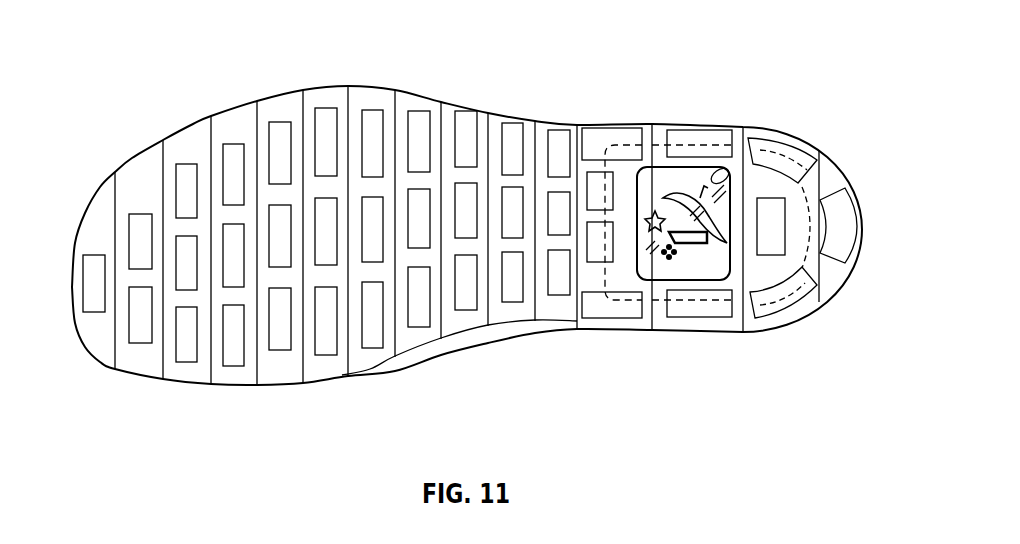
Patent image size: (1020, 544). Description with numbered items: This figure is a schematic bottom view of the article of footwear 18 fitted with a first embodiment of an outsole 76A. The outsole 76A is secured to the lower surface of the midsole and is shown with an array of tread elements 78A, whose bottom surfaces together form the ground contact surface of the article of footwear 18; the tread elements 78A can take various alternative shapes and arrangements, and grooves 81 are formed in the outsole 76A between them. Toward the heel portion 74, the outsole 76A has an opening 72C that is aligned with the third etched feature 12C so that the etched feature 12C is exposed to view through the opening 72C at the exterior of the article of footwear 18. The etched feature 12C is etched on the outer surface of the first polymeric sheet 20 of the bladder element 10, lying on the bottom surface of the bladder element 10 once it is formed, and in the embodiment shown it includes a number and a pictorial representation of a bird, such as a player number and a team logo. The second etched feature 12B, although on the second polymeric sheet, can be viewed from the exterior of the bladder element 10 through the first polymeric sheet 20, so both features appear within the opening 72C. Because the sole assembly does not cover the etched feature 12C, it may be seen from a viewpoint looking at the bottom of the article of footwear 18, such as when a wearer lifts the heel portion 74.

The article of footwear 18 is at (683, 46).
The bladder element 10 is at (713, 147).
The second etched feature 12B is at (643, 223).
The third etched feature 12C is at (685, 190).
The first polymeric sheet 20 is at (687, 273).
The opening 72C is at (727, 183).
The heel portion 74 is at (748, 135).
The outsole 76A is at (500, 310).
The tread elements 78A is at (323, 120).
The grooves 81 is at (303, 362).